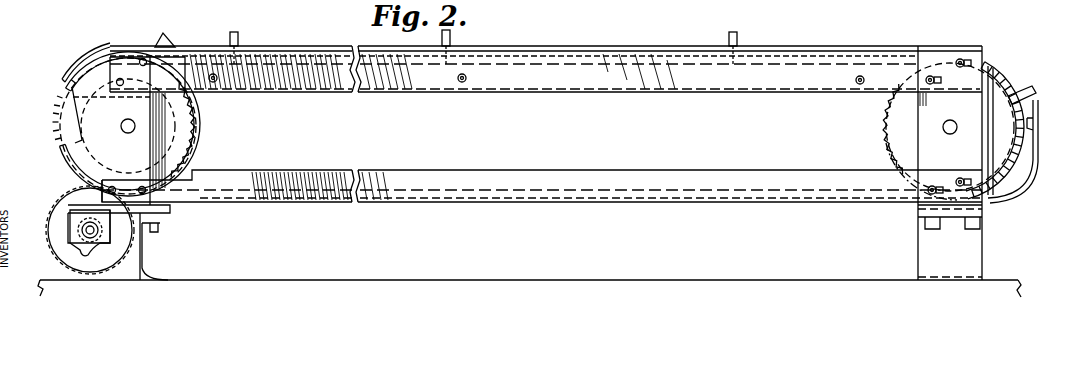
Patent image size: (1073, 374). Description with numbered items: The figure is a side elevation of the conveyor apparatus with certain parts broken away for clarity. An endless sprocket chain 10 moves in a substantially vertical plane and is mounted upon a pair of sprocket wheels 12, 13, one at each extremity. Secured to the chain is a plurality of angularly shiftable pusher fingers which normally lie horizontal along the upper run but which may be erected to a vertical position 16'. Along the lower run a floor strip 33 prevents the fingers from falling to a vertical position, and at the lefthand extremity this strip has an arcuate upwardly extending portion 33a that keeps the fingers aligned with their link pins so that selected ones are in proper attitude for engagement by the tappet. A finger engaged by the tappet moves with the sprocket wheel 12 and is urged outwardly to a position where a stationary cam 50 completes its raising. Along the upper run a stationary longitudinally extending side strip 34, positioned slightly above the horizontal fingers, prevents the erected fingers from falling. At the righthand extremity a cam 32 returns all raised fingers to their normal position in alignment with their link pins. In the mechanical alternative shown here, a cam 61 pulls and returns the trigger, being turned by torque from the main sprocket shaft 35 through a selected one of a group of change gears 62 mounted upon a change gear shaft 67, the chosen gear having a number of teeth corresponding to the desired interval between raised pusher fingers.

The endless sprocket chain 10 is at (999, 65).
The sprocket wheel 12 is at (196, 135).
The sprocket wheel 13 is at (885, 128).
The vertical position of finger 16' is at (634, 84).
The cam 32 is at (1033, 160).
The floor strip 33 is at (575, 199).
The arcuate upwardly extending portion 33a is at (58, 158).
The side strip 34 is at (88, 0).
The main sprocket shaft 35 is at (123, 133).
The stationary cam 50 is at (76, 63).
The cam 61 is at (82, 257).
The change gears 62 is at (67, 200).
The change gear shaft 67 is at (84, 229).